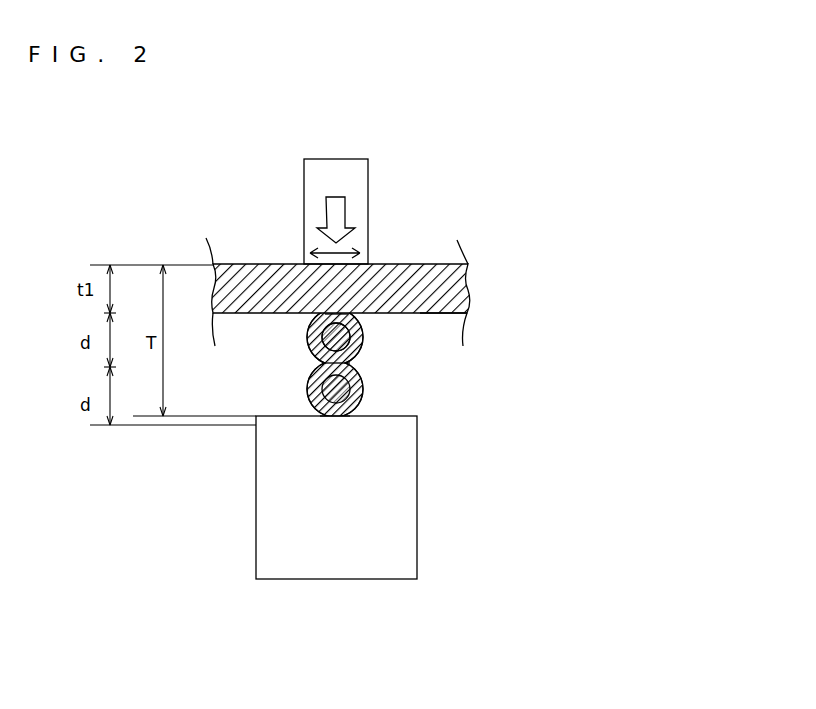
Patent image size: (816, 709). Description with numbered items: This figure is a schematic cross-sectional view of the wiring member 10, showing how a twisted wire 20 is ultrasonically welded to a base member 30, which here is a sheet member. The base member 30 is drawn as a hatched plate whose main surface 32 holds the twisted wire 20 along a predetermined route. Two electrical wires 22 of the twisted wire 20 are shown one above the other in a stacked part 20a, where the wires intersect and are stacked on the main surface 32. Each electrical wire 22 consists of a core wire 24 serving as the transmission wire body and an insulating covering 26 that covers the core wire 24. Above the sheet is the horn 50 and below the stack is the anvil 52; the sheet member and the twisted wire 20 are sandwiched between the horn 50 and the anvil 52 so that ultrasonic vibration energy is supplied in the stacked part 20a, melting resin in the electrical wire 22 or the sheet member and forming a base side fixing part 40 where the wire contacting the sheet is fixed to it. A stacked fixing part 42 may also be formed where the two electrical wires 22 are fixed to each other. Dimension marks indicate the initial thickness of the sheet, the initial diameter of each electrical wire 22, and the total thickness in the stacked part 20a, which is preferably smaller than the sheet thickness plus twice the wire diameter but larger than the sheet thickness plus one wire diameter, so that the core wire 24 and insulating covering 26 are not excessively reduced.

The wiring member 10 is at (429, 175).
The twisted wire 20 is at (336, 403).
The stacked part 20a is at (337, 414).
The electrical wire 22 is at (356, 337).
The core wire 24 is at (307, 332).
The insulating covering 26 is at (313, 355).
The base member 30 is at (424, 262).
The main surface 32 is at (467, 318).
The base side fixing part 40 is at (362, 315).
The stacked fixing part 42 is at (348, 362).
The horn 50 is at (337, 158).
The anvil 52 is at (418, 500).